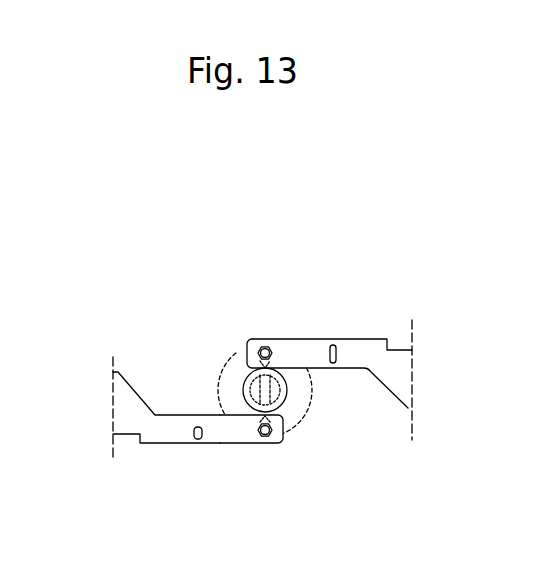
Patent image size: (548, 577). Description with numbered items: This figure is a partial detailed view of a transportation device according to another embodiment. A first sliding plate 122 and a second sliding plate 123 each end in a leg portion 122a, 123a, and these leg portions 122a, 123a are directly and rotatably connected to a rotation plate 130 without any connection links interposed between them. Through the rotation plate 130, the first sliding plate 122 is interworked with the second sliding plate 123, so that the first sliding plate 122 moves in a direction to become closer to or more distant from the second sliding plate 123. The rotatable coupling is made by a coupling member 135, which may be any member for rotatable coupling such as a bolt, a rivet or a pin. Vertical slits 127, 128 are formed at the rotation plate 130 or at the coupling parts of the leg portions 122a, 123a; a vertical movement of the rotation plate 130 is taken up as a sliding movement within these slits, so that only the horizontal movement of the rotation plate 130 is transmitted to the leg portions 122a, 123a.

The first sliding plate 122 is at (163, 427).
The leg portion 122a is at (237, 433).
The second sliding plate 123 is at (367, 353).
The leg portion 123a is at (297, 353).
The vertical slit 127 is at (264, 440).
The vertical slit 128 is at (285, 393).
The rotation plate 130 is at (233, 382).
The coupling member 135 is at (272, 355).